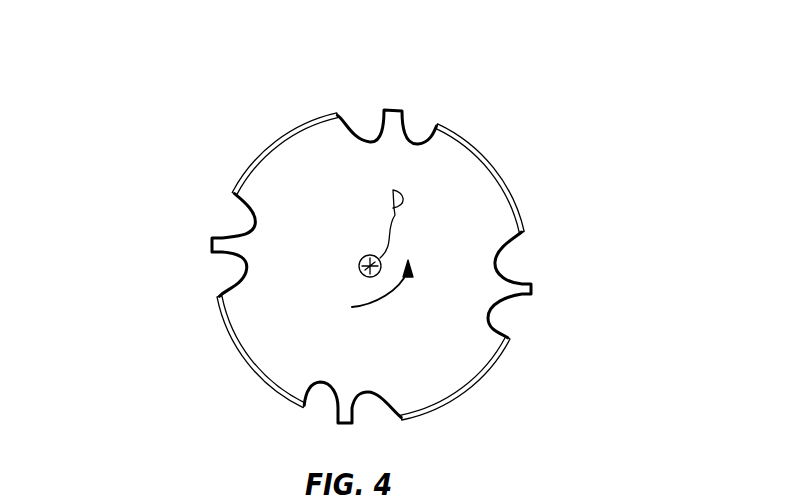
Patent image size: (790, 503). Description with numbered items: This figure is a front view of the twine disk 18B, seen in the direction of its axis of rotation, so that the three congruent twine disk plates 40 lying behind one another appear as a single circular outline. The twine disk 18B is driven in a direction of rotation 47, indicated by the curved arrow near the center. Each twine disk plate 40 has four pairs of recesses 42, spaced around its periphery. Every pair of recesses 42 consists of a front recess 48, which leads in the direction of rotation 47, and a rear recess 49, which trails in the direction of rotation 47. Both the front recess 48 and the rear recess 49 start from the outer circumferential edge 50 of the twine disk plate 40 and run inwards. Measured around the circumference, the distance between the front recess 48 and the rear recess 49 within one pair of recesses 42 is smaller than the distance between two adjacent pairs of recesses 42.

The twine disk 18B is at (377, 239).
The twine disk plate 40 is at (399, 217).
The pair of recesses 42 is at (360, 239).
The direction of rotation 47 is at (388, 307).
The front recess 48 is at (364, 130).
The rear recess 49 is at (416, 135).
The outer circumferential edge 50 is at (266, 140).